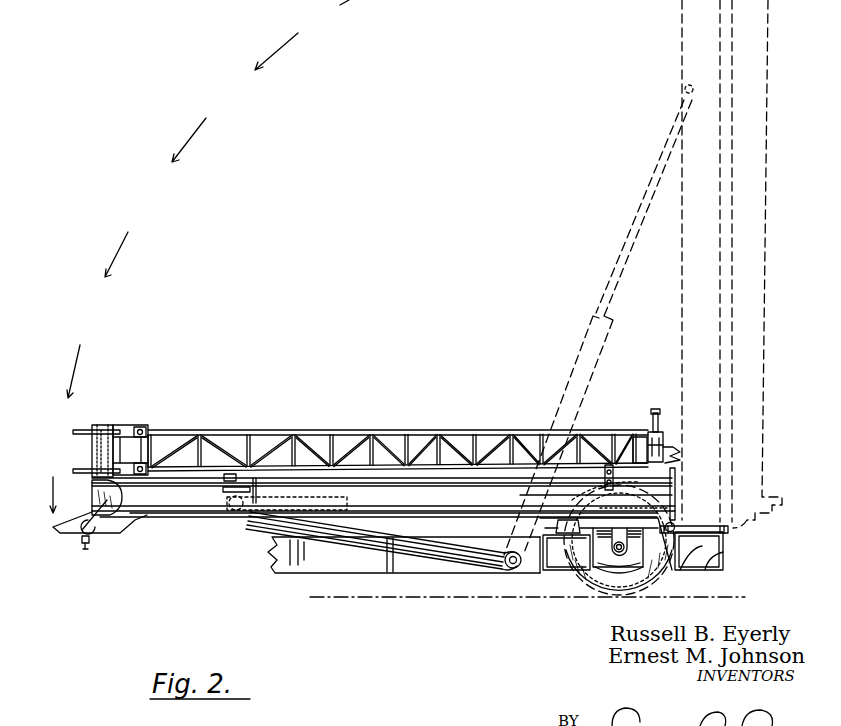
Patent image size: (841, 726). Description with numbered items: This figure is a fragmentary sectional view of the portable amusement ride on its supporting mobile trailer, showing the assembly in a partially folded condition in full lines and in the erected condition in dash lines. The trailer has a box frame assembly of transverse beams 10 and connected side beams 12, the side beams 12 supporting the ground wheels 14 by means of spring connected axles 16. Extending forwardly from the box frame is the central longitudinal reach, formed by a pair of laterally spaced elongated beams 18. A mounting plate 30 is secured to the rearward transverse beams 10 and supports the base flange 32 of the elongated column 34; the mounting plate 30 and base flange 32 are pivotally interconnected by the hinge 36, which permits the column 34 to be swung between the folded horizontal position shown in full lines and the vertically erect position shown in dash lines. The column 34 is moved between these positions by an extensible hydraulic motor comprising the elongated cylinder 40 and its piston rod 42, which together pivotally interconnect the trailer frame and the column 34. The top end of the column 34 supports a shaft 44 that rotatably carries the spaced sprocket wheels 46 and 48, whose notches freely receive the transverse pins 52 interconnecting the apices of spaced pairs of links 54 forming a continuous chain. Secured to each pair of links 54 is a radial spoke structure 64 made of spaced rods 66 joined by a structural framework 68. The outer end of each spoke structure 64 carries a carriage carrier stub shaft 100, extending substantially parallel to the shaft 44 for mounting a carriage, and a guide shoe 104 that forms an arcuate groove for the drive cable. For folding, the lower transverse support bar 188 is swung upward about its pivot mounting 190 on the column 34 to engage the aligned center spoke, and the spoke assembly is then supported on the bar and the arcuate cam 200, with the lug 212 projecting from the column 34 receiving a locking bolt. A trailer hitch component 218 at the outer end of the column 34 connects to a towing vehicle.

The transverse beams 10 is at (540, 553).
The side beams 12 is at (658, 557).
The ground wheels 14 is at (590, 578).
The spring connected axles 16 is at (622, 555).
The elongated beams 18 is at (325, 567).
The mounting plate 30 is at (732, 533).
The base flange 32 is at (676, 495).
The column 34 is at (682, 298).
The hinge 36 is at (674, 523).
The cylinder 40 is at (463, 553).
The piston rod 42 is at (640, 205).
The shaft 44 is at (92, 448).
The sprocket wheel 46 is at (103, 480).
The sprocket wheel 48 is at (80, 426).
The transverse pins 52 is at (124, 450).
The links 54 is at (143, 460).
The radial spoke structure 64 is at (398, 423).
The spaced rods 66 is at (213, 468).
The structural framework 68 is at (310, 443).
The carriage carrier stub shaft 100 is at (655, 412).
The guide shoe 104 is at (680, 455).
The lower transverse support bar 188 is at (608, 465).
The pivot mounting 190 is at (600, 482).
The arcuate cam 200 is at (260, 478).
The lug 212 is at (222, 478).
The trailer hitch component 218 is at (86, 549).